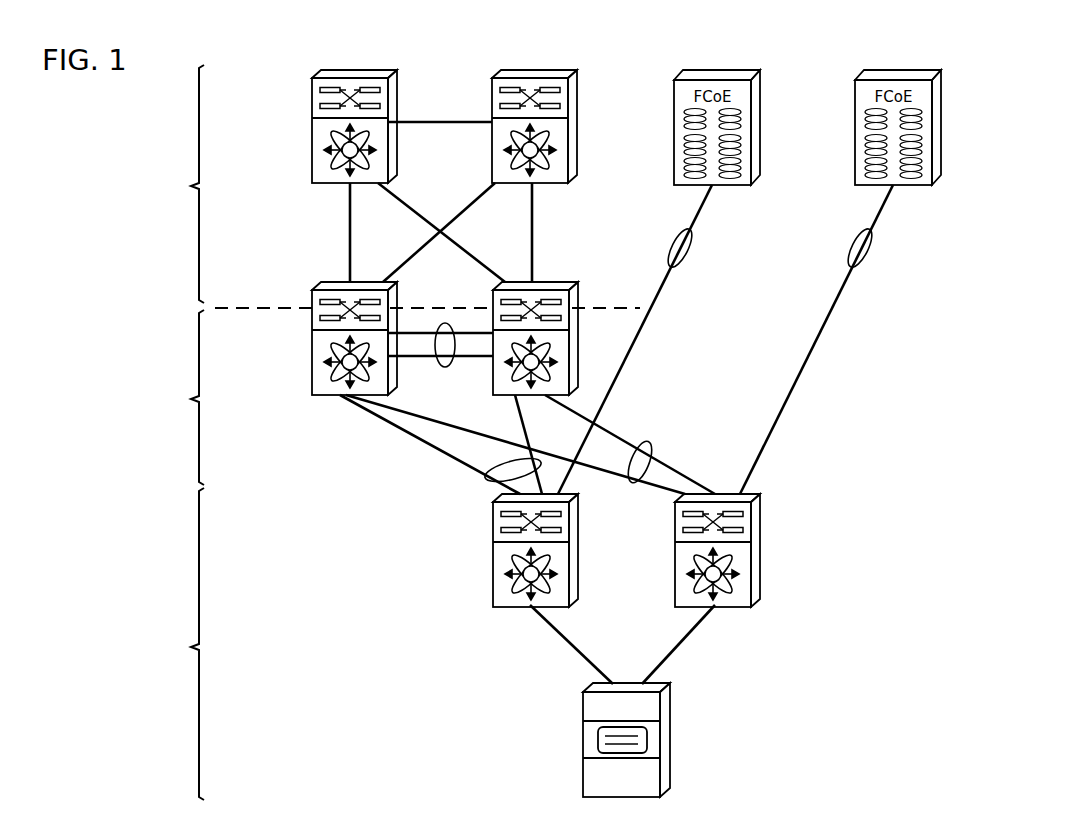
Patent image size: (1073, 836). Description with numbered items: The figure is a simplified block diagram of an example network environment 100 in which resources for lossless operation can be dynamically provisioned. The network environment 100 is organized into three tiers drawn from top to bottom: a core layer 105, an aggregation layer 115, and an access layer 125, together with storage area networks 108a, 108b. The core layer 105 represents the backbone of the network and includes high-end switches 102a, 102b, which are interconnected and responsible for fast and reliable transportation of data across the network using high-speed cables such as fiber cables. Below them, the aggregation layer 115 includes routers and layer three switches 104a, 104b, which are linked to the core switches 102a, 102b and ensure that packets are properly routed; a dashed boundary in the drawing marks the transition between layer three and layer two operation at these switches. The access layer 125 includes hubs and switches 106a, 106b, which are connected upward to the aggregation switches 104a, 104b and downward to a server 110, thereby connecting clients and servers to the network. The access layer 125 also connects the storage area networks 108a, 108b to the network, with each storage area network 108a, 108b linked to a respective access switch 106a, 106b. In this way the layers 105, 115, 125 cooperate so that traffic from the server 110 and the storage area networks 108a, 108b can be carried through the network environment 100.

The network environment 100 is at (949, 625).
The switch 102a is at (340, 70).
The switch 102b is at (522, 70).
The switch 104a is at (323, 281).
The switch 104b is at (570, 281).
The core layer 105 is at (173, 184).
The switch 106a is at (512, 606).
The switch 106b is at (732, 606).
The storage area network 108a is at (742, 70).
The storage area network 108b is at (924, 70).
The server 110 is at (583, 745).
The aggregation layer 115 is at (139, 397).
The access layer 125 is at (139, 644).